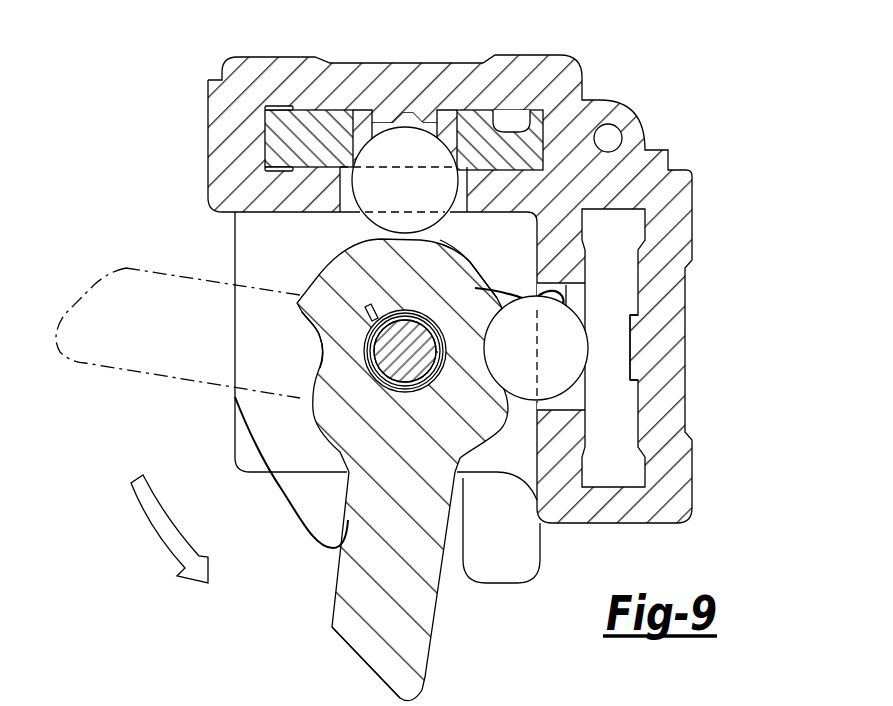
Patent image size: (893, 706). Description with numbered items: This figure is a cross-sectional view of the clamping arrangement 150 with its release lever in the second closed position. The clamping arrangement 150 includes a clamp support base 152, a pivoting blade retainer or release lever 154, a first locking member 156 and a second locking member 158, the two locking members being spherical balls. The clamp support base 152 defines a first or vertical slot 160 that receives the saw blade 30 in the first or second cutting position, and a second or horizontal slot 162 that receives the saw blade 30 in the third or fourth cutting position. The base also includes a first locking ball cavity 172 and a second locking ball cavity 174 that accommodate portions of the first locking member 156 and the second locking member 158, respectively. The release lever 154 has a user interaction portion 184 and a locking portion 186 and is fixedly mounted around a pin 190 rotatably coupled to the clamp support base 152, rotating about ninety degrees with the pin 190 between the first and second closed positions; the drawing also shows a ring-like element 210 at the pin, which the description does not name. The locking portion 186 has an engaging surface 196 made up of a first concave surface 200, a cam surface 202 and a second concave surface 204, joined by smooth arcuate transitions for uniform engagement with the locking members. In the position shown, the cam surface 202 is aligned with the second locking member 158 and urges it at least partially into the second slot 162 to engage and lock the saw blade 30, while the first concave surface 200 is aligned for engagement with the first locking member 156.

The clamping arrangement 150 is at (115, 98).
The clamp support base 152 is at (276, 62).
The saw blade 30 is at (322, 123).
The second locking ball cavity 174 is at (340, 200).
The second locking member 158 is at (425, 143).
The second slot 162 is at (500, 129).
The engaging surface 196 is at (302, 270).
The second concave surface 204 is at (316, 335).
The retaining ring 210 is at (363, 355).
The pin 190 is at (395, 365).
The locking portion 186 is at (363, 449).
The release lever 154 is at (348, 630).
The user interaction portion 184 is at (415, 647).
The first locking ball cavity 172 is at (504, 292).
The cam surface 202 is at (457, 245).
The first locking member 156 is at (570, 338).
The first concave surface 200 is at (492, 368).
The first slot 160 is at (633, 435).